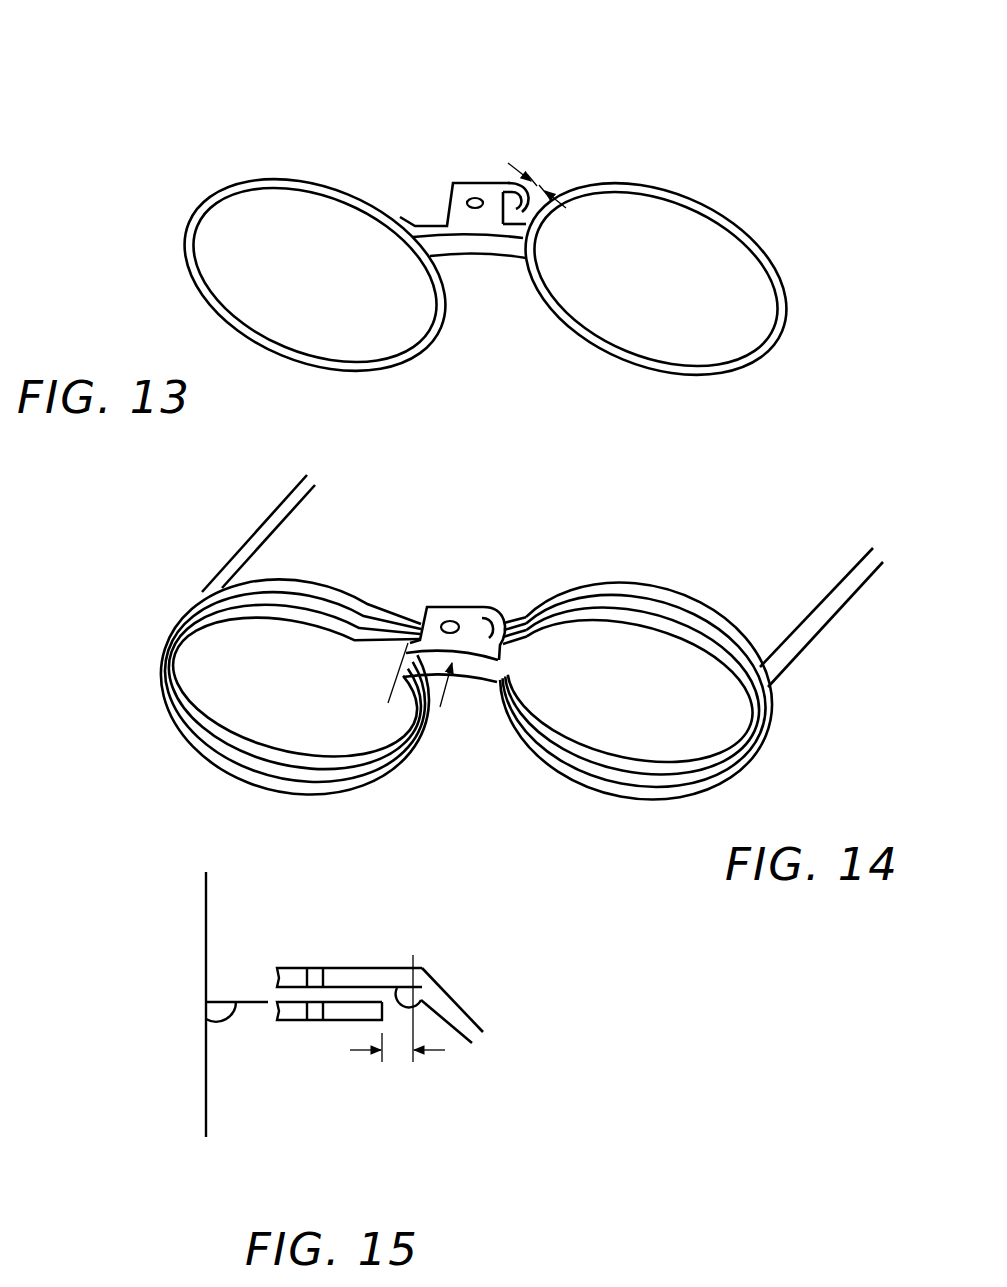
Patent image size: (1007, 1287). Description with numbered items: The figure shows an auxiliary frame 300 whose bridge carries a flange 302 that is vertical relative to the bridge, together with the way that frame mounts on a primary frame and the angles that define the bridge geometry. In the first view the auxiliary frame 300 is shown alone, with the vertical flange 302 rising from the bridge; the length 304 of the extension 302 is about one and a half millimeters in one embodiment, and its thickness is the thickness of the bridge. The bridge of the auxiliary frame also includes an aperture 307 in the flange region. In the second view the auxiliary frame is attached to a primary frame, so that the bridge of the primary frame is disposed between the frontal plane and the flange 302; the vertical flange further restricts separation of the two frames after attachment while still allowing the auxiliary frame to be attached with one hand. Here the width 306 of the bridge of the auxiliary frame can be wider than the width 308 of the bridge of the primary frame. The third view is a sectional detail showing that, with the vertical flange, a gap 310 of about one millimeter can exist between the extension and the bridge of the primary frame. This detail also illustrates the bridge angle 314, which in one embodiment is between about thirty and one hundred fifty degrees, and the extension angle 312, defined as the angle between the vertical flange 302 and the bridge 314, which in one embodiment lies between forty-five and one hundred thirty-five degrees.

In FIG. 13, the auxiliary frame 300 is at (655, 76).
In FIG. 13, the flange 302 is at (483, 181).
In FIG. 15, the flange 302 is at (453, 998).
In FIG. 13, the length of the extension 304 is at (541, 178).
In FIG. 14, the width of the bridge of the auxiliary frame 306 is at (477, 596).
In FIG. 13, the aperture 307 is at (478, 209).
In FIG. 14, the width of the bridge of the primary frame 308 is at (418, 606).
In FIG. 15, the gap 310 is at (397, 1055).
In FIG. 15, the extension angle 312 is at (424, 1007).
In FIG. 15, the bridge angle 314 is at (357, 967).